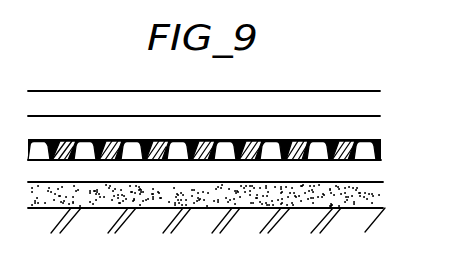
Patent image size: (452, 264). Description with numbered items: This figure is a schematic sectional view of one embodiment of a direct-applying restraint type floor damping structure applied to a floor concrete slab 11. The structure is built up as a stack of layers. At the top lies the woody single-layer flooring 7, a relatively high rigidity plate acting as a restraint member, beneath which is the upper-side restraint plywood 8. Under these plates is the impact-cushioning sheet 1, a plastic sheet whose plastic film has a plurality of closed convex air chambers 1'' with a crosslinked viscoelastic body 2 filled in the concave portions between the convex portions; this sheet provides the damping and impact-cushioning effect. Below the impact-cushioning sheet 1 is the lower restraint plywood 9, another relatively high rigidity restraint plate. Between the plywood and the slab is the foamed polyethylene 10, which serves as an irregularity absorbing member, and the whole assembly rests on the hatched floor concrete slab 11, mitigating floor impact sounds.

The woody single-layer flooring 7 is at (366, 106).
The upper-side restraint plywood 8 is at (361, 118).
The crosslinked viscoelastic body 2 is at (340, 147).
The convex air chamber 1'' is at (395, 149).
The impact-cushioning sheet 1 is at (226, 175).
The restraint plywood 9 is at (361, 175).
The foamed polyethylene 10 is at (366, 197).
The floor concrete slab 11 is at (346, 220).